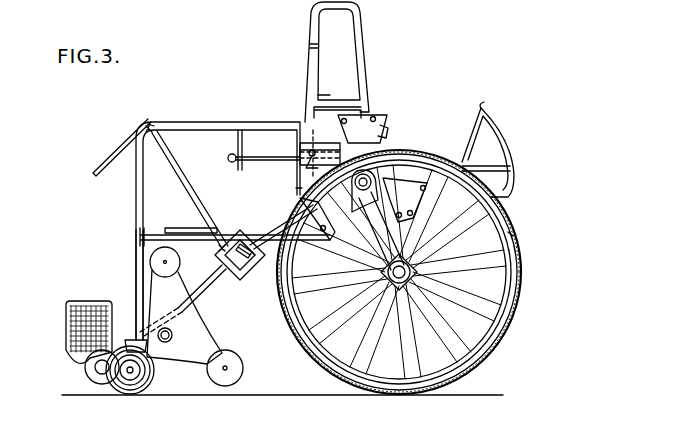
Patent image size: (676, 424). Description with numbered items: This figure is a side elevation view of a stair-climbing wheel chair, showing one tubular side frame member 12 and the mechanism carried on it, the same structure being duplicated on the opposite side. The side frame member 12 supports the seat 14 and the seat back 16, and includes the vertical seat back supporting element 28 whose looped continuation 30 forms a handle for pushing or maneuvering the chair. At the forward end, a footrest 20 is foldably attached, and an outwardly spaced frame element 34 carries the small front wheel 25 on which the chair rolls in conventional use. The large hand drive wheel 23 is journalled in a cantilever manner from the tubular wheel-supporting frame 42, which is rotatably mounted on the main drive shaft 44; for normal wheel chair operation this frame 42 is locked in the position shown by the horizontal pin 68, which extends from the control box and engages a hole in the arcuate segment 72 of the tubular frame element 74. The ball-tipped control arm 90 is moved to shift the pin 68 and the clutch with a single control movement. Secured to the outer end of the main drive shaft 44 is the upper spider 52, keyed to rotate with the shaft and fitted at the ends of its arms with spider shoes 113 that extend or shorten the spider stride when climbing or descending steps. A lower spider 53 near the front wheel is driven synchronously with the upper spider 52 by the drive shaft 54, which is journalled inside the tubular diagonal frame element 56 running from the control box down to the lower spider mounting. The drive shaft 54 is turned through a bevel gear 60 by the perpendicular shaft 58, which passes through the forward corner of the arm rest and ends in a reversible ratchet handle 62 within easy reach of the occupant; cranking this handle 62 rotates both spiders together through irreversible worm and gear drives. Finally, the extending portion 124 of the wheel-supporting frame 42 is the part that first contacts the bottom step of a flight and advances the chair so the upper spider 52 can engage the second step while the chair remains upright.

The tubular side frame member 12 is at (224, 122).
The seat 14 is at (177, 228).
The seat back 16 is at (319, 90).
The footrest 20 is at (66, 304).
The hand drive wheel 23 is at (521, 298).
The small front wheel 25 is at (155, 375).
The vertical seat back supporting element 28 is at (312, 24).
The looped continuation 30 is at (362, 36).
The outwardly spaced frame element 34 is at (136, 264).
The tubular wheel-supporting frame 42 is at (523, 175).
The main drive shaft 44 is at (374, 170).
The upper spider 52 is at (388, 125).
The lower spider 53 is at (204, 343).
The drive shaft 54 is at (238, 268).
The tubular diagonal frame element 56 is at (203, 289).
The shaft 58 is at (141, 120).
The bevel gear 60 is at (240, 245).
The ratchet handle 62 is at (108, 155).
The horizontal pin 68 is at (300, 151).
The arcuate segment 72 is at (300, 160).
The tubular frame element 74 is at (314, 164).
The ball-tipped control arm 90 is at (229, 161).
The spider shoes 113 is at (300, 191).
The extending portion 124 is at (490, 122).